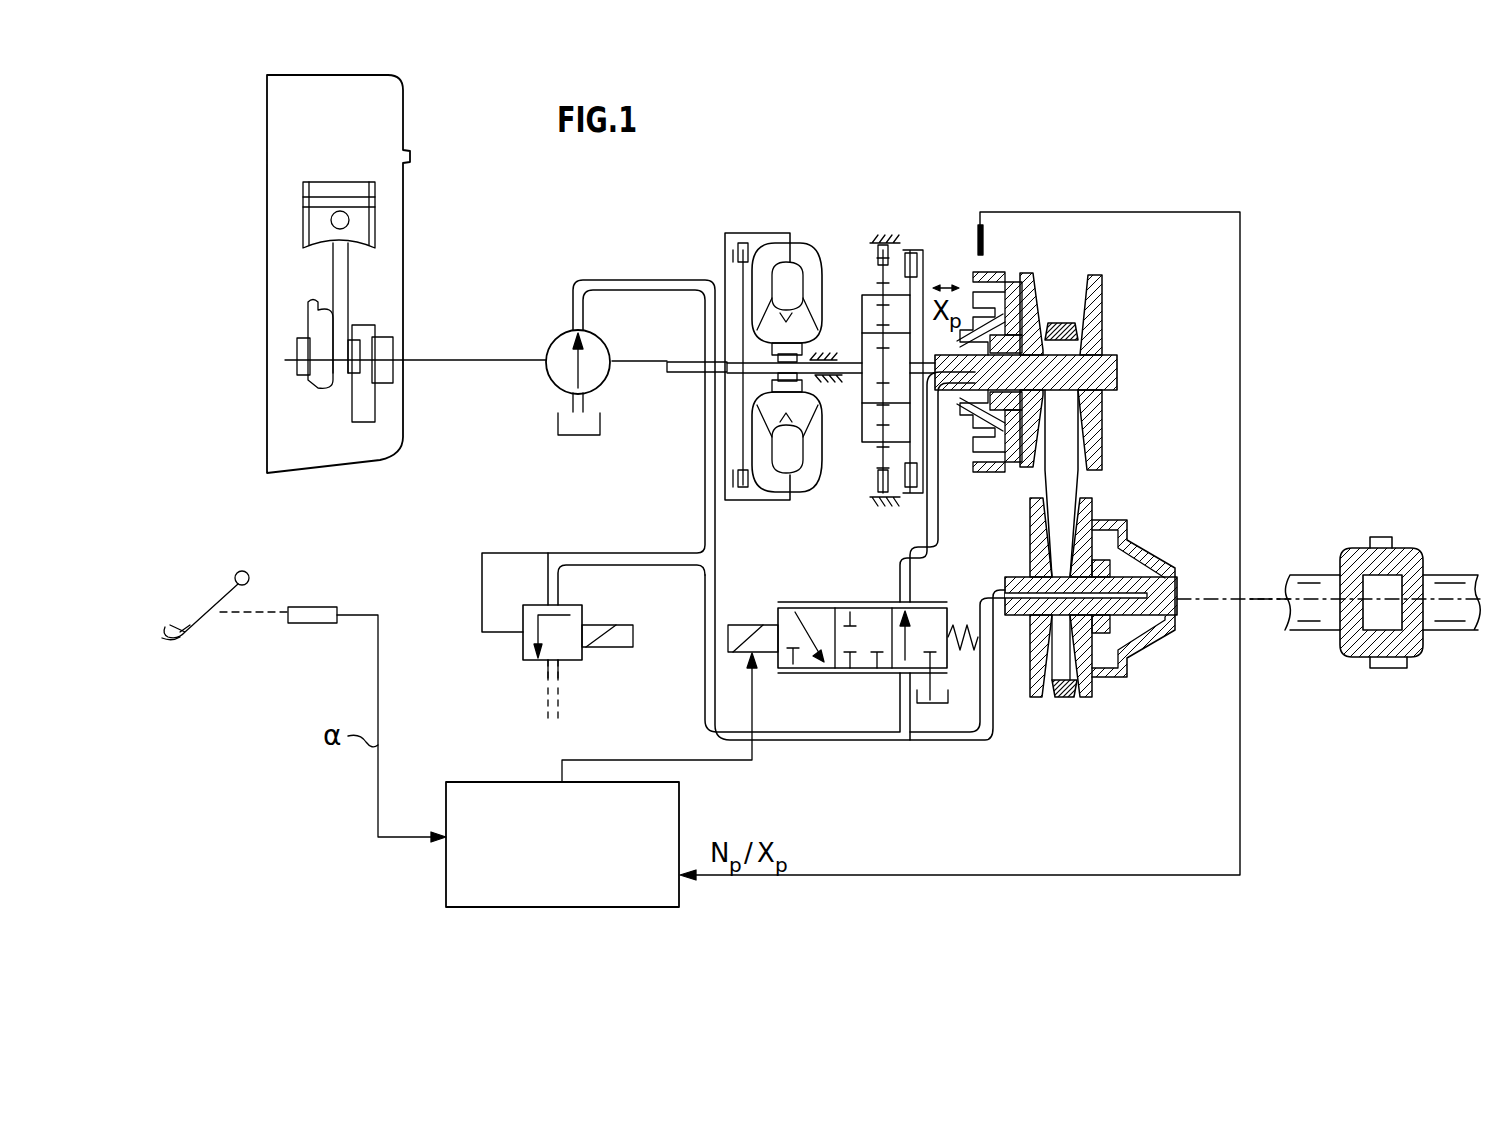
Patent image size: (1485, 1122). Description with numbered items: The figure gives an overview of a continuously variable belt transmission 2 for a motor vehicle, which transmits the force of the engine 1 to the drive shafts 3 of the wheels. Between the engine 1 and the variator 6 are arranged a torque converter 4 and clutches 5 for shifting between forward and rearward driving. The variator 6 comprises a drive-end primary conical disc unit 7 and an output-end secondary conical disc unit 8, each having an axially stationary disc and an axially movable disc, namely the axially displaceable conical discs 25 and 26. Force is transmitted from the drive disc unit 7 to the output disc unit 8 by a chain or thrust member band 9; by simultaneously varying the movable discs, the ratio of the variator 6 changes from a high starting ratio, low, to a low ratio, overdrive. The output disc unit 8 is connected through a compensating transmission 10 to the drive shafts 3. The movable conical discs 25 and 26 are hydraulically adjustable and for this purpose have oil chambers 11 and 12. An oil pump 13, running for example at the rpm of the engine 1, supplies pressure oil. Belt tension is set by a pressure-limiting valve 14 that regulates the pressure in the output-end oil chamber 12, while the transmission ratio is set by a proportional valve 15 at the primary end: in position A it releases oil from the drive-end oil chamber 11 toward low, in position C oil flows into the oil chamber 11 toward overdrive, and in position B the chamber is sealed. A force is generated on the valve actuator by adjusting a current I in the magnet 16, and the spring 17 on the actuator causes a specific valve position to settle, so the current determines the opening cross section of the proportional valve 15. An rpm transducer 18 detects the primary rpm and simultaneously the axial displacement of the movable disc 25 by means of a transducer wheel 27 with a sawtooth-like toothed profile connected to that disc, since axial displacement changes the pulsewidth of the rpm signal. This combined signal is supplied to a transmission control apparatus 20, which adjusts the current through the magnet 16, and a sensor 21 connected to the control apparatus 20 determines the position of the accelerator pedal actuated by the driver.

The engine 1 is at (388, 116).
The continuously variable belt transmission 2 is at (1118, 174).
The drive shafts 3 is at (1440, 588).
The torque converter 4 is at (805, 262).
The clutches 5 is at (910, 243).
The variator 6 is at (1067, 379).
The drive-end (primary) conical disc unit 7 is at (1066, 282).
The output-end (secondary) conical disc unit 8 is at (1147, 629).
The chain or thrust member band (belt) 9 is at (1068, 486).
The compensating transmission 10 is at (1380, 547).
The drive-end oil chamber 11 is at (1018, 460).
The output-end oil chamber 12 is at (1132, 562).
The oil pump 13 is at (553, 342).
The pressure-limiting valve 14 is at (530, 646).
The proportional valve (primary valve) 15 is at (840, 670).
The magnet 16 is at (740, 625).
The spring 17 is at (955, 626).
The rpm transducer 18 is at (986, 240).
The transmission control apparatus 20 is at (577, 860).
The sensor 21 is at (310, 607).
The axially displaceable conical disc 25 is at (1033, 275).
The axially displaceable conical disc 26 is at (1092, 690).
The transducer wheel 27 is at (975, 272).